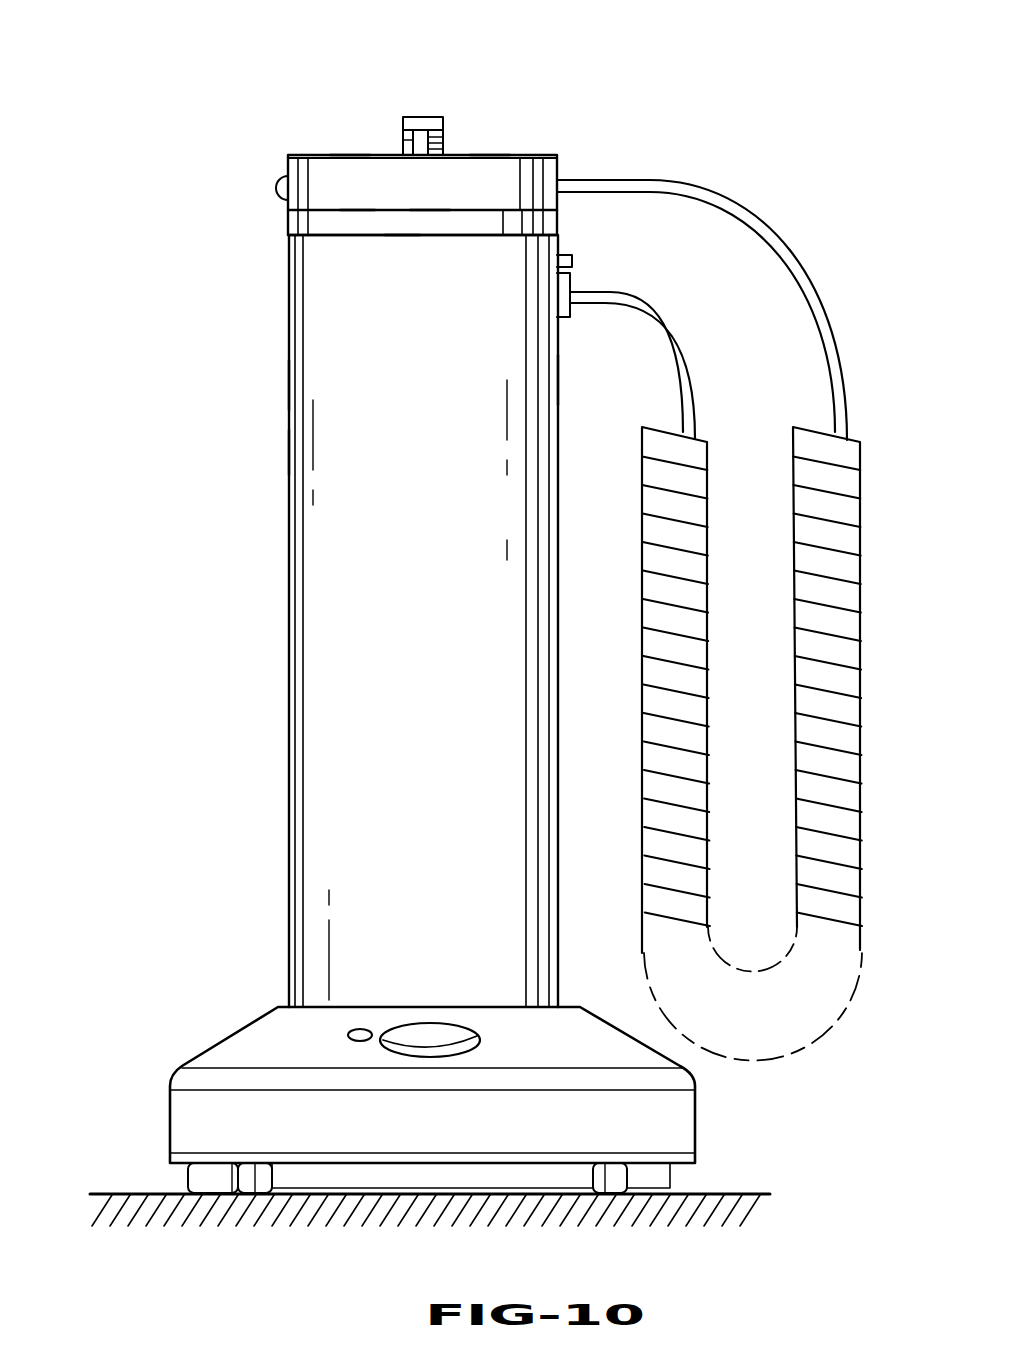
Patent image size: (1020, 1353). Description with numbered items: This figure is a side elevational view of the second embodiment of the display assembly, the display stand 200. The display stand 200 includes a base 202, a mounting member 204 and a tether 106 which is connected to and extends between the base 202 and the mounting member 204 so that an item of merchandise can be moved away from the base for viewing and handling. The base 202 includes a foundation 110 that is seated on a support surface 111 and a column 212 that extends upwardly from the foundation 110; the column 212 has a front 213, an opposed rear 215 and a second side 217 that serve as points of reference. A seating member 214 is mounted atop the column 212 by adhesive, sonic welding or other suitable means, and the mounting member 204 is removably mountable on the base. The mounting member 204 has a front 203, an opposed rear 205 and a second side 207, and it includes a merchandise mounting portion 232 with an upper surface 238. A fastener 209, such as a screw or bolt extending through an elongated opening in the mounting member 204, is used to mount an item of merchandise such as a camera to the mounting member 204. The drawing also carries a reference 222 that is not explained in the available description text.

The display stand 200 is at (656, 64).
The base 202 is at (276, 820).
The front 203 is at (288, 165).
The mounting member 204 is at (487, 157).
The rear 205 is at (557, 200).
The second side 207 is at (430, 188).
The fastener 209 is at (420, 117).
The column 212 is at (290, 385).
The front 213 is at (290, 452).
The seating member 214 is at (288, 222).
The rear 215 is at (558, 380).
The second side 217 is at (420, 518).
The band interior 222 is at (403, 232).
The merchandise mounting portion 232 is at (358, 202).
The upper surface 238 is at (350, 155).
The tether 106 is at (753, 207).
The foundation 110 is at (229, 1032).
The support surface 111 is at (736, 1192).